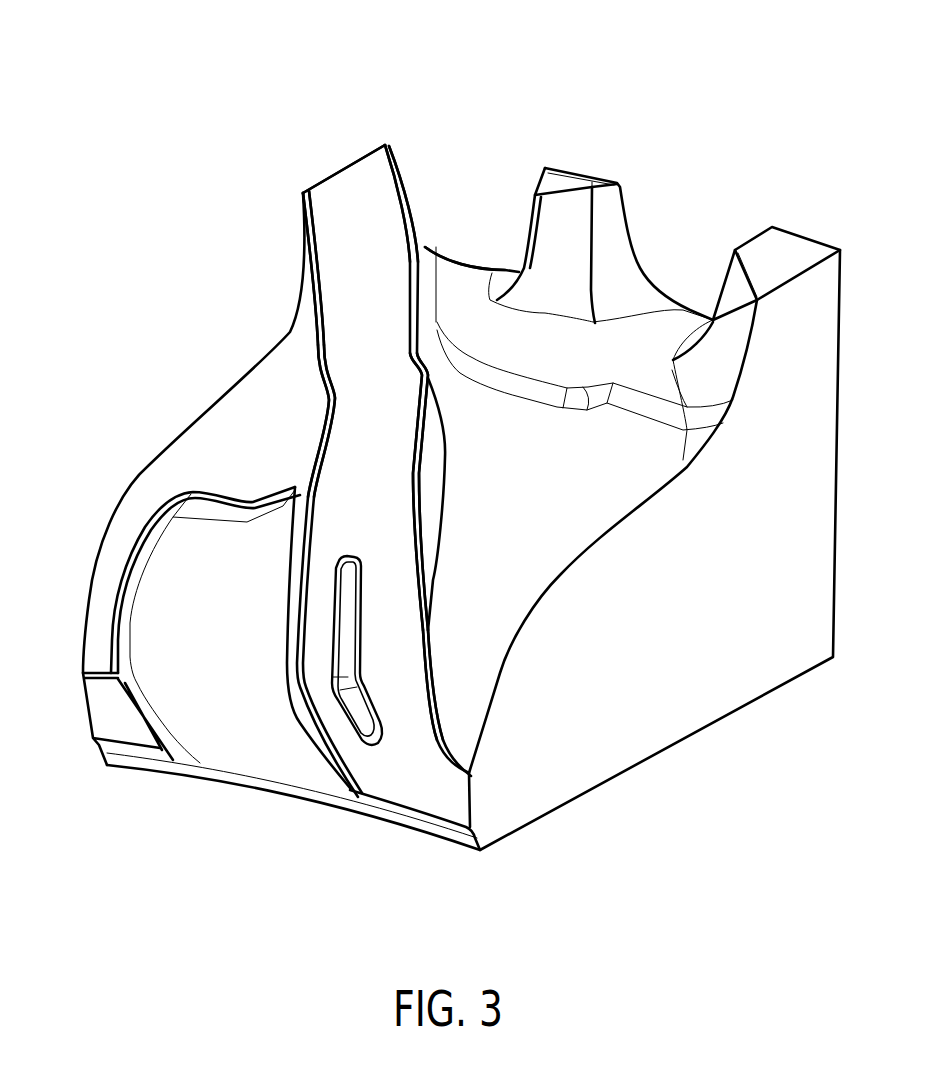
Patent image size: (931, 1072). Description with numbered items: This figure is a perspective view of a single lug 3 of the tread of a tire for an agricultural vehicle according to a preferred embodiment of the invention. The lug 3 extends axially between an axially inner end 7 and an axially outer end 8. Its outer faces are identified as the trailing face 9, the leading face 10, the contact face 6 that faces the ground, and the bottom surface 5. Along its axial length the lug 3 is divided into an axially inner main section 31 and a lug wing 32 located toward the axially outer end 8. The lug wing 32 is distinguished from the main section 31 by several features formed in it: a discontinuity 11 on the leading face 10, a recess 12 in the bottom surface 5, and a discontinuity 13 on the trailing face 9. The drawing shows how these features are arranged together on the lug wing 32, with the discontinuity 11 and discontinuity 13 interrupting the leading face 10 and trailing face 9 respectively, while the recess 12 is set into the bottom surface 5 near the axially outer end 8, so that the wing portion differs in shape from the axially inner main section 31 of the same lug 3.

The lug 3 is at (181, 138).
The bottom surface 5 is at (201, 451).
The contact face 6 is at (377, 176).
The axially inner end 7 is at (333, 152).
The axially outer end 8 is at (389, 712).
The trailing face 9 is at (434, 232).
The leading face 10 is at (296, 250).
The discontinuity 11 is at (301, 440).
The recess 12 is at (219, 694).
The discontinuity 13 is at (401, 448).
The axially inner main section 31 is at (384, 215).
The lug wing 32 is at (383, 522).